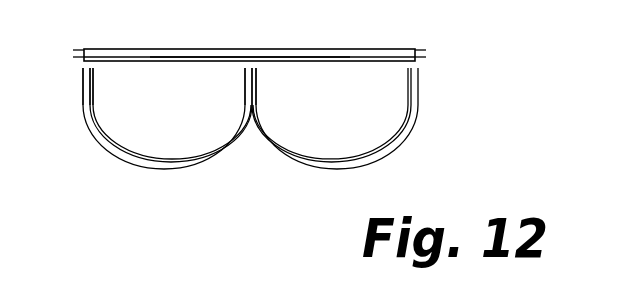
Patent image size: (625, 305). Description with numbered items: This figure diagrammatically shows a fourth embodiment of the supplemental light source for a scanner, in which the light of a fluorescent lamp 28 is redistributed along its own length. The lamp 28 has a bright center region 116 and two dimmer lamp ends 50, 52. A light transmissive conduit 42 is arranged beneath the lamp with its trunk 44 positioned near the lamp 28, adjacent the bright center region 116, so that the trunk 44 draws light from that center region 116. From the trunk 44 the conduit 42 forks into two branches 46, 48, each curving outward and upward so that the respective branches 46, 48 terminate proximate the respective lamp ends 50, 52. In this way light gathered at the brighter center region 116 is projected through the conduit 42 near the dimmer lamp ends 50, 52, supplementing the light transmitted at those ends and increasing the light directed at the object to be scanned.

The fluorescent lamp 28 is at (327, 45).
The light transmissive conduit 42 is at (237, 160).
The trunk 44 is at (246, 81).
The branch 46 is at (420, 85).
The branch 48 is at (87, 88).
The lamp end 50 is at (405, 53).
The lamp end 52 is at (97, 53).
The bright center region 116 is at (250, 54).